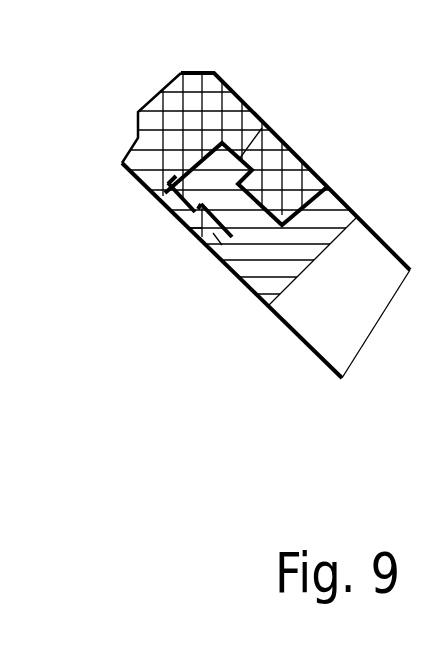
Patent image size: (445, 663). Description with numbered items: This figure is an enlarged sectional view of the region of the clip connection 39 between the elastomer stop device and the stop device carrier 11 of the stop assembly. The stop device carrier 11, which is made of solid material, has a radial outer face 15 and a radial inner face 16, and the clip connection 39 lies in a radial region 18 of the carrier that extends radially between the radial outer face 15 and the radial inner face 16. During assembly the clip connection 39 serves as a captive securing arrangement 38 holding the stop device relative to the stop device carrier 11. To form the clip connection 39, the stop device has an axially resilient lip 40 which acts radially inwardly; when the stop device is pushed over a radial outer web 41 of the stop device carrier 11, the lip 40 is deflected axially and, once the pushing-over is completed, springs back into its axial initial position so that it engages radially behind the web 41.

The stop device carrier 11 is at (317, 217).
The radial outer face 15 is at (165, 132).
The radial inner face 16 is at (312, 262).
The radial region 18 is at (284, 157).
The captive securing arrangement 38 is at (182, 217).
The clip connection 39 is at (196, 238).
The axially resilient lip 40 is at (214, 236).
The radial outer web 41 is at (262, 128).